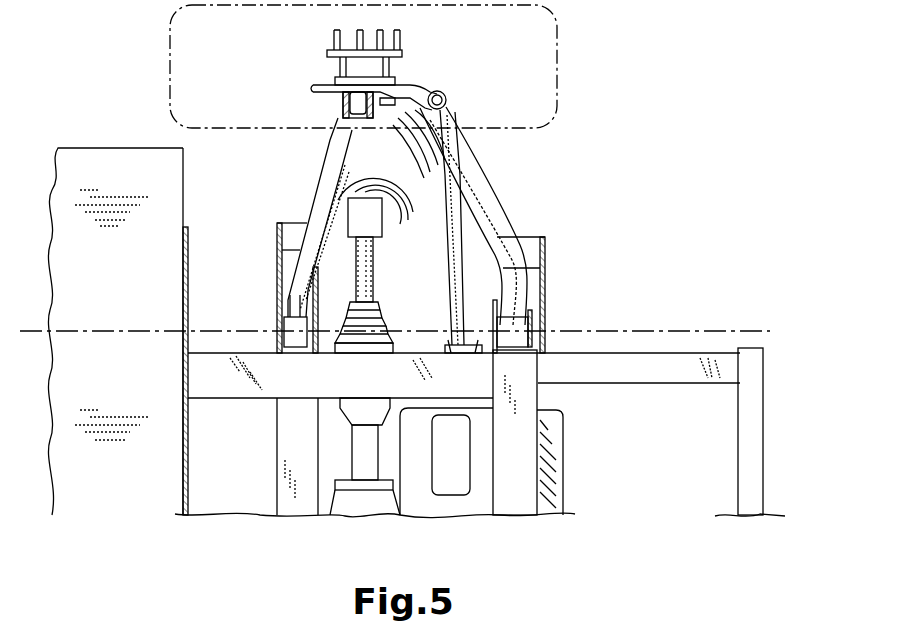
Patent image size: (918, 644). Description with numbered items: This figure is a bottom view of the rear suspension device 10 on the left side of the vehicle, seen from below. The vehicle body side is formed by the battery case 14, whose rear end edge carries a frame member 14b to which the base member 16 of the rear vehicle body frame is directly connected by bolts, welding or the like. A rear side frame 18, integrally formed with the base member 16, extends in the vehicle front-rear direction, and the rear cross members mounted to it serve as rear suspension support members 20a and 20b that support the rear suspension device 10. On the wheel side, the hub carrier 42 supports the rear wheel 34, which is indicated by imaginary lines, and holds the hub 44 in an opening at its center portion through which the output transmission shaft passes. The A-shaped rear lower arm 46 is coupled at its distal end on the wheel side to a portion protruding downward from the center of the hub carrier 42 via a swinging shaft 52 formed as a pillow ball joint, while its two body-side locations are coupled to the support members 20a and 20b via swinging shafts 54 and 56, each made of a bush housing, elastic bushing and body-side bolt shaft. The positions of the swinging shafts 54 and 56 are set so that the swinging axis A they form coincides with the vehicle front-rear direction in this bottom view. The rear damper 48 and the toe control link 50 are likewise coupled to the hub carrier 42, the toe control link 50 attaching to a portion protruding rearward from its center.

The rear suspension device 10 is at (544, 141).
The battery case 14 is at (78, 147).
The frame member 14b is at (183, 178).
The base member 16 is at (188, 243).
The rear side frame 18 is at (195, 352).
The rear suspension support member 20a is at (278, 468).
The rear suspension support member 20b is at (540, 472).
The rear wheel 34 is at (557, 47).
The hub carrier 42 is at (405, 90).
The hub 44 is at (340, 70).
The rear lower arm 46 is at (465, 242).
The rear damper 48 is at (408, 230).
The toe control link 50 is at (455, 150).
The swinging shaft 52 is at (342, 104).
The swinging shaft 54 is at (295, 358).
The swinging shaft 56 is at (518, 360).
The swinging axis A is at (712, 330).